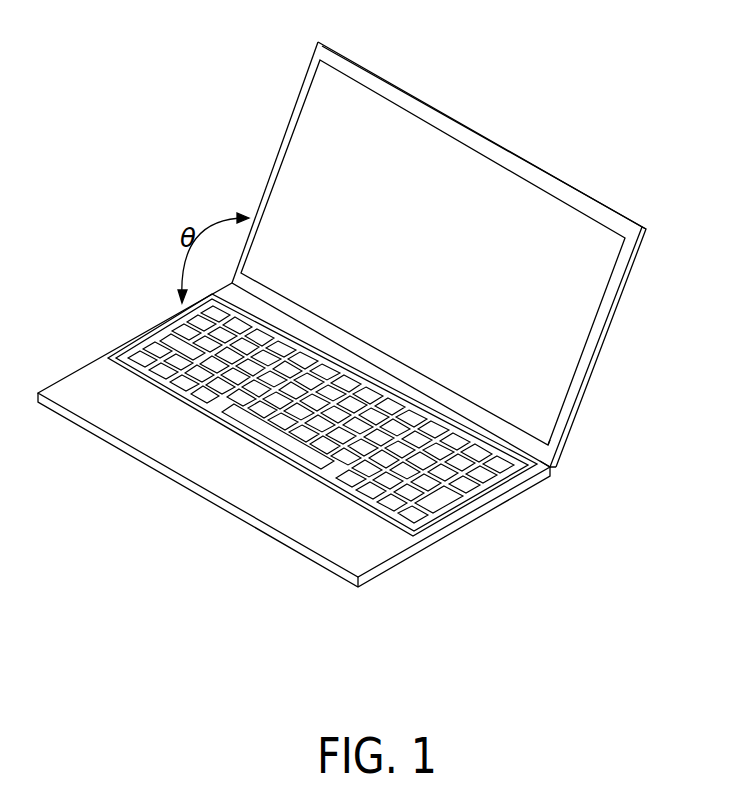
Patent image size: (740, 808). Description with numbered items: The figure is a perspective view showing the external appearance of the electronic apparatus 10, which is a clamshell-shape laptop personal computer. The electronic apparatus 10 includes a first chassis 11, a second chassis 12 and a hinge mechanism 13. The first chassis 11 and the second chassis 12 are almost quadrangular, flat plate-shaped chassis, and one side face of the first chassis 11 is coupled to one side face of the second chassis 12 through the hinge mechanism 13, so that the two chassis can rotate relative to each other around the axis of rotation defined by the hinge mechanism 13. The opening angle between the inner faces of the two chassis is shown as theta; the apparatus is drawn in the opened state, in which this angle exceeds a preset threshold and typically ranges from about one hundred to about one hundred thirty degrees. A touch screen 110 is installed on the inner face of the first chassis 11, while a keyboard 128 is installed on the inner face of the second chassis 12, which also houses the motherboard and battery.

The electronic apparatus 10 is at (550, 118).
The first chassis 11 is at (565, 180).
The second chassis 12 is at (487, 510).
The hinge mechanism 13 is at (553, 471).
The touch screen 110 is at (320, 175).
The keyboard 128 is at (177, 341).